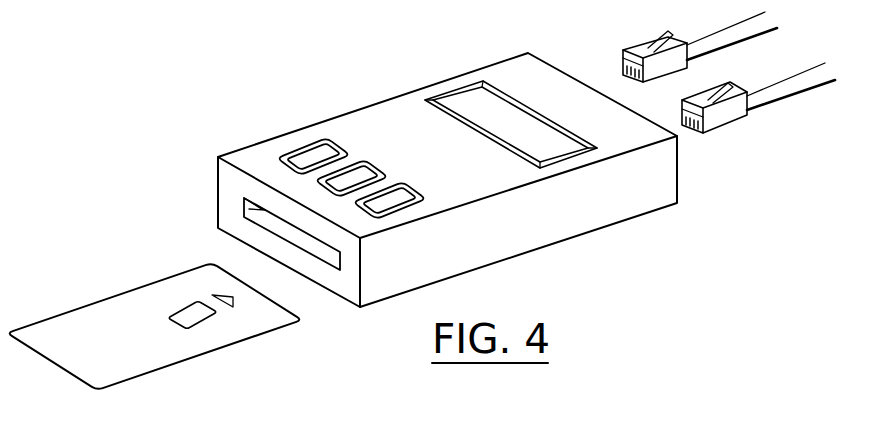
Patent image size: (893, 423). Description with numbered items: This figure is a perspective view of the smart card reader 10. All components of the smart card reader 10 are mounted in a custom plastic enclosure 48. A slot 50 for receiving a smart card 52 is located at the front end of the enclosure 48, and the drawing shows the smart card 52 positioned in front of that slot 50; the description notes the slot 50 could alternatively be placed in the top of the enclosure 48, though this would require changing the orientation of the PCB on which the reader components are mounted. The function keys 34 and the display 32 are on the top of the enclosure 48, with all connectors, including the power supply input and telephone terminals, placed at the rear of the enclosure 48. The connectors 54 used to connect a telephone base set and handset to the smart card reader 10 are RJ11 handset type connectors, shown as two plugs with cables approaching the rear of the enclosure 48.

The smart card reader 10 is at (717, 202).
The display 32 is at (475, 103).
The function keys 34 is at (310, 157).
The enclosure 48 is at (523, 228).
The slot 50 is at (324, 250).
The smart card 52 is at (101, 298).
The connectors 54 is at (640, 53).